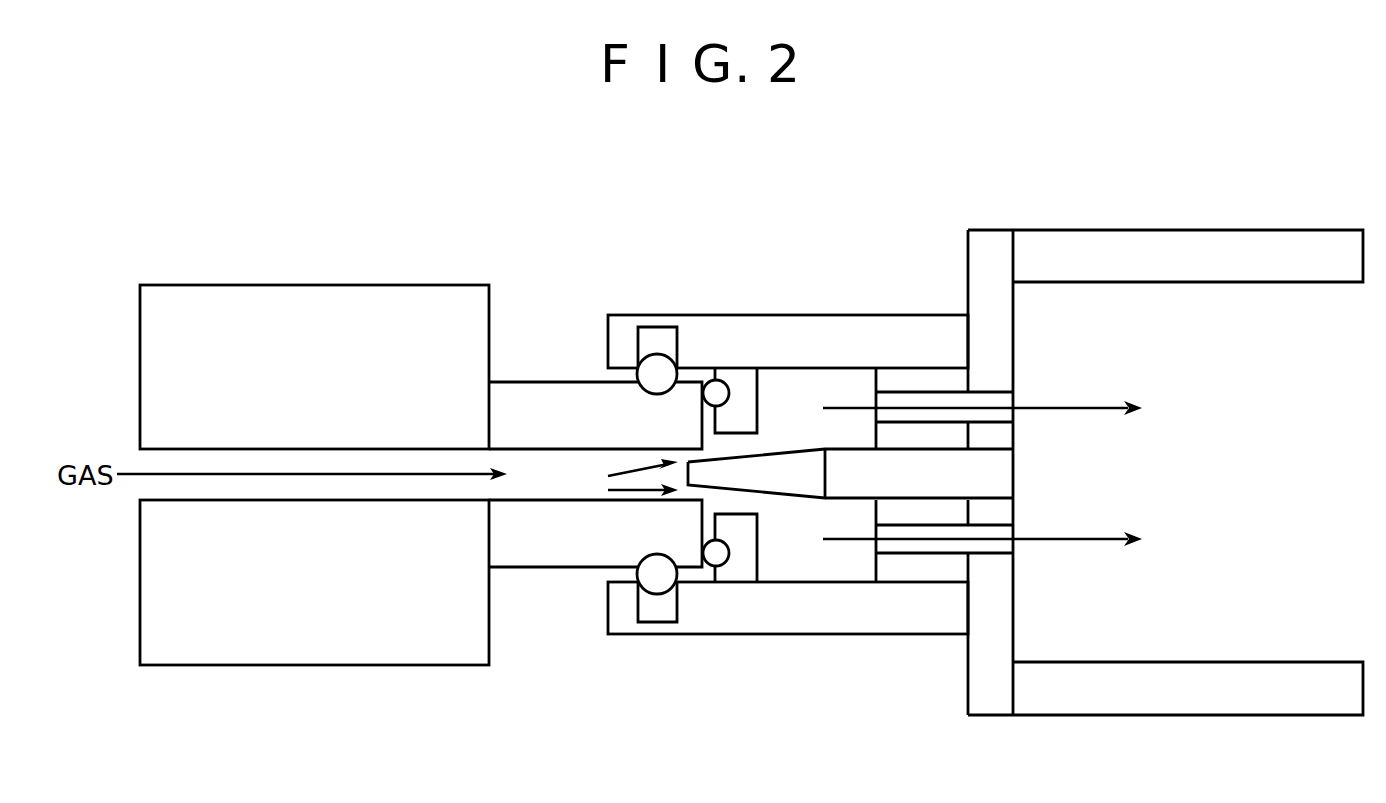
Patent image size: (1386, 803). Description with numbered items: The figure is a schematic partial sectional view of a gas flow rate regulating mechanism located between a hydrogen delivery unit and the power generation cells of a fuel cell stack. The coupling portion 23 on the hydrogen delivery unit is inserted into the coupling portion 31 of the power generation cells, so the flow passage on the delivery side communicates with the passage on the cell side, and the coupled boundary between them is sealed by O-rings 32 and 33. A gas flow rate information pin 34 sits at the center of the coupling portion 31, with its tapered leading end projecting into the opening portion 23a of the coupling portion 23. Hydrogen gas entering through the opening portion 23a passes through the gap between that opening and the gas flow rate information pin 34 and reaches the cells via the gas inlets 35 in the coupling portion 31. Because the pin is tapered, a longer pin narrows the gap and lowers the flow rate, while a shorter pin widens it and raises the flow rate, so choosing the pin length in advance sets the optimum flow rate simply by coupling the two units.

The coupling portion 23 is at (319, 285).
The opening portion 23a is at (566, 449).
The coupling portion 31 is at (1072, 230).
The O-ring 32 is at (660, 354).
The O-ring 33 is at (716, 566).
The gas flow rate information pin 34 is at (788, 473).
The gas inlets 35 is at (893, 395).